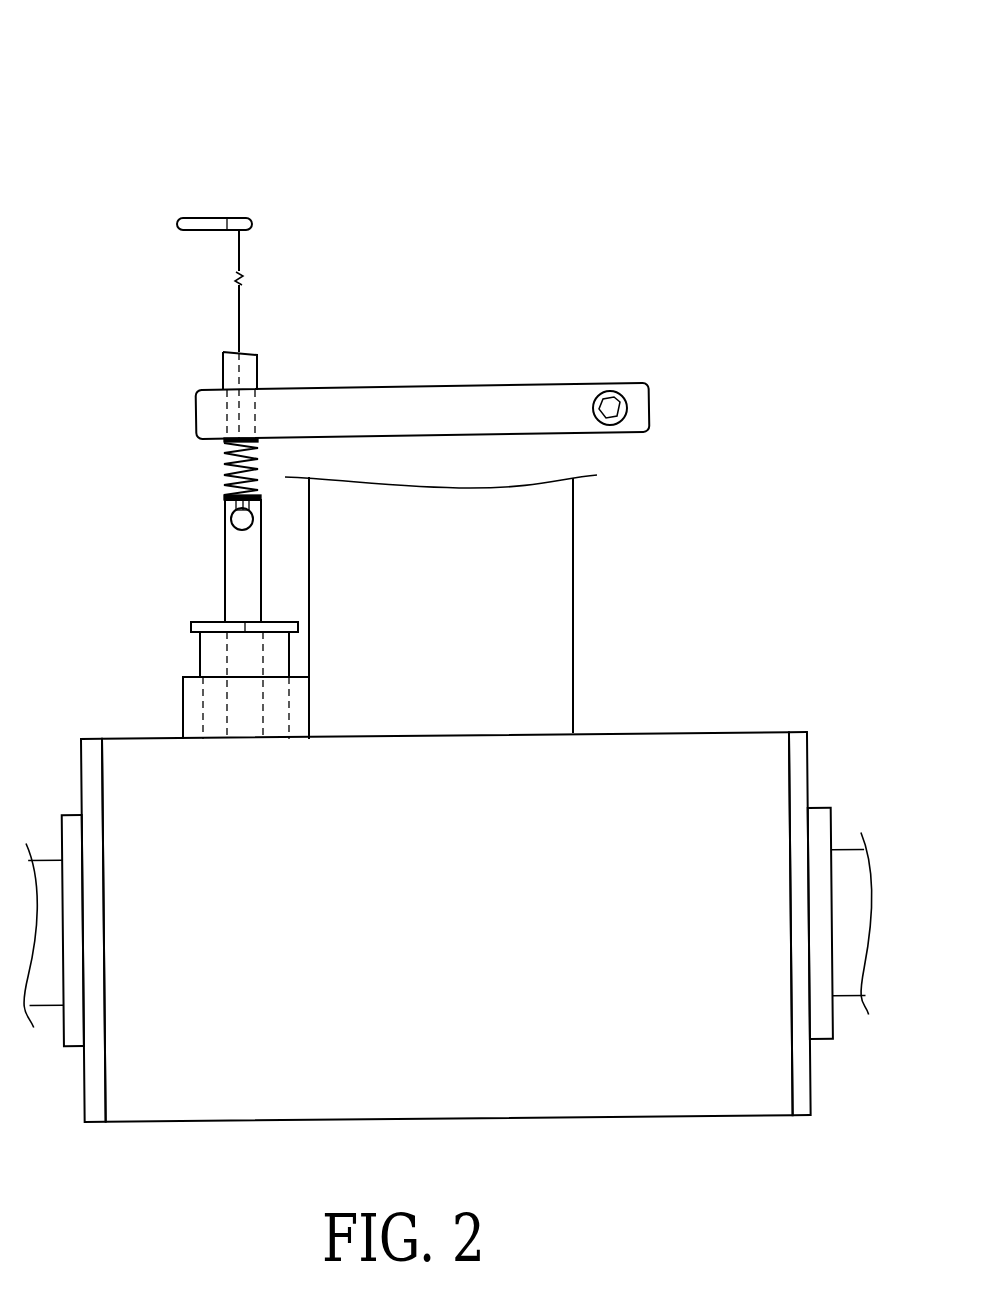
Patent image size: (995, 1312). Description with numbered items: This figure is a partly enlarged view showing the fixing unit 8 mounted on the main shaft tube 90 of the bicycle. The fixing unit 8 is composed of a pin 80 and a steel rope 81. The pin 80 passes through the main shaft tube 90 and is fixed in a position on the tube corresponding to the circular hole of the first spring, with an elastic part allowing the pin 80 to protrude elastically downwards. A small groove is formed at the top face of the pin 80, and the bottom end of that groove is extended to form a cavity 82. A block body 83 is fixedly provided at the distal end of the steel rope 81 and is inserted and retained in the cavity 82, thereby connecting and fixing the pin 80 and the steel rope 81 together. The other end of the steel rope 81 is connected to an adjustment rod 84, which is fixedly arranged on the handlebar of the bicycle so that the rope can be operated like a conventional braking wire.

The fixing unit 8 is at (168, 159).
The pin 80 is at (243, 582).
The steel rope 81 is at (238, 313).
The cavity 82 is at (225, 535).
The block body 83 is at (232, 512).
The adjustment rod 84 is at (180, 226).
The main shaft tube 90 is at (697, 750).